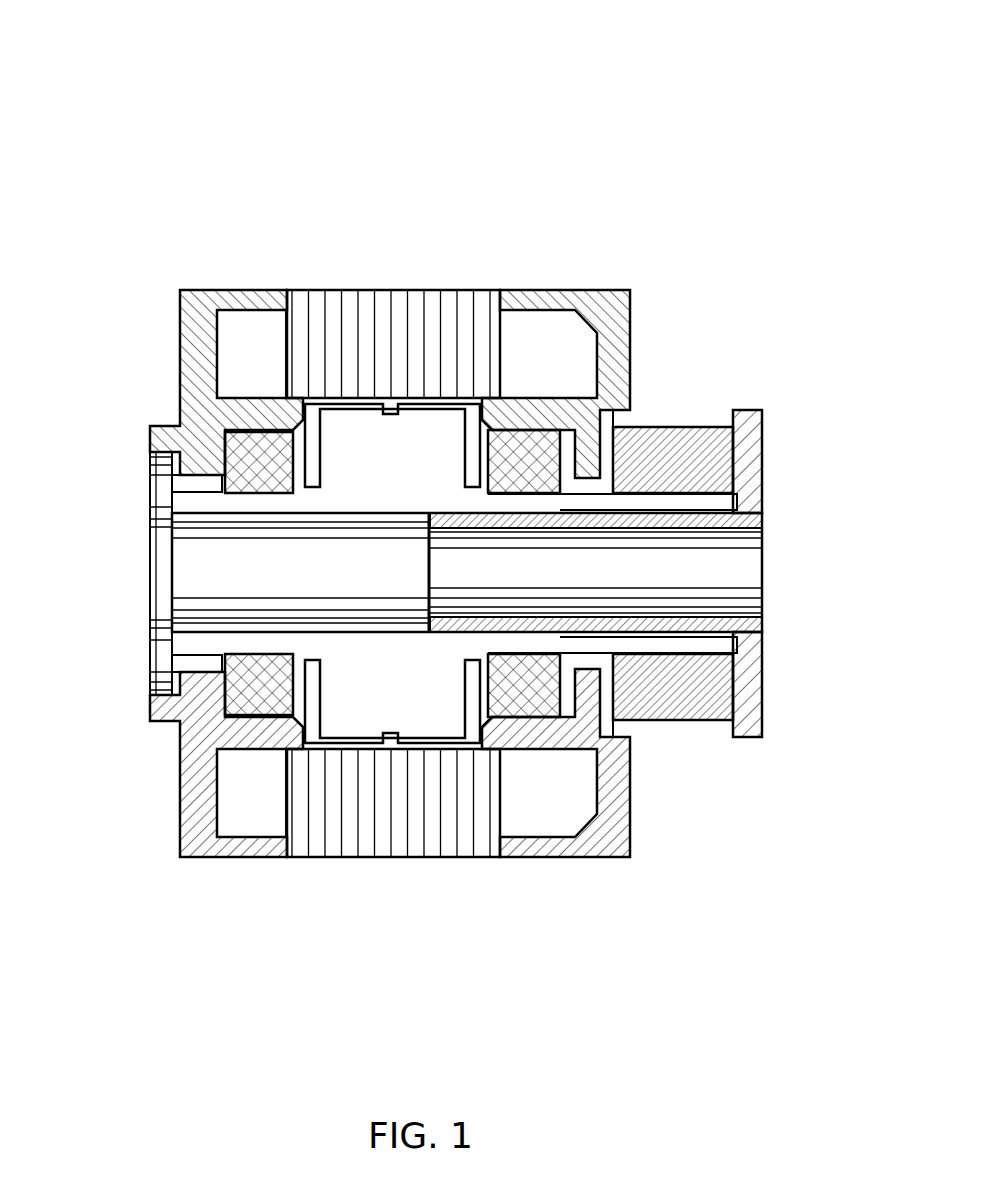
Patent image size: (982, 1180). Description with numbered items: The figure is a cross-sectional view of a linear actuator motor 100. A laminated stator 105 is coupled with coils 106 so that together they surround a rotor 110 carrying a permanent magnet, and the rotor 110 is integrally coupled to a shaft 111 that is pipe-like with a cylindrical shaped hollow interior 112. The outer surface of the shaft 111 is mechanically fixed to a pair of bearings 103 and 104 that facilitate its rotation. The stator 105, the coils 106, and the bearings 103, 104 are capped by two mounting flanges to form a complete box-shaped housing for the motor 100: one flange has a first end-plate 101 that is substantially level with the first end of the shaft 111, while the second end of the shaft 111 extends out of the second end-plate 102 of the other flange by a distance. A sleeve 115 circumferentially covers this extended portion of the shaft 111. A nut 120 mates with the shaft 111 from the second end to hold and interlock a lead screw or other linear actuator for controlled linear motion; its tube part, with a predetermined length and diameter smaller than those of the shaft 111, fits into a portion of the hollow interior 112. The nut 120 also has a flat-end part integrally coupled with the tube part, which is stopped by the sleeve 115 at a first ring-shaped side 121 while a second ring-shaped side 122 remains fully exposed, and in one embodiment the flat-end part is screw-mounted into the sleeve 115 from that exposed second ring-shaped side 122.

The linear actuator motor 100 is at (209, 80).
The first end-plate 101 is at (178, 345).
The second end-plate 102 is at (632, 312).
The bearing 103 is at (250, 463).
The bearing 104 is at (522, 690).
The laminated stator 105 is at (405, 308).
The coils 106 is at (262, 342).
The rotor 110 is at (422, 445).
The shaft 111 is at (195, 503).
The hollow interior 112 is at (316, 595).
The sleeve 115 is at (668, 698).
The nut 120 is at (707, 527).
The first ring-shaped side 121 is at (724, 445).
The second ring-shaped side 122 is at (778, 431).